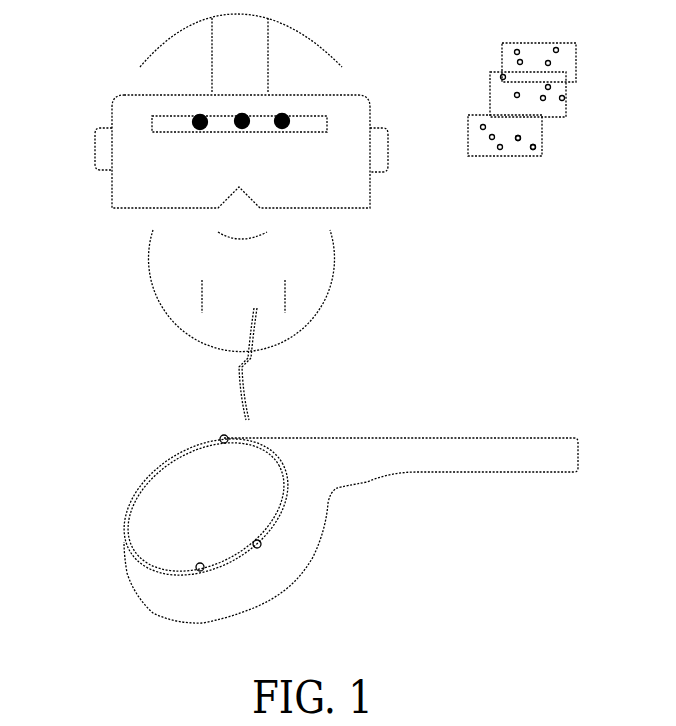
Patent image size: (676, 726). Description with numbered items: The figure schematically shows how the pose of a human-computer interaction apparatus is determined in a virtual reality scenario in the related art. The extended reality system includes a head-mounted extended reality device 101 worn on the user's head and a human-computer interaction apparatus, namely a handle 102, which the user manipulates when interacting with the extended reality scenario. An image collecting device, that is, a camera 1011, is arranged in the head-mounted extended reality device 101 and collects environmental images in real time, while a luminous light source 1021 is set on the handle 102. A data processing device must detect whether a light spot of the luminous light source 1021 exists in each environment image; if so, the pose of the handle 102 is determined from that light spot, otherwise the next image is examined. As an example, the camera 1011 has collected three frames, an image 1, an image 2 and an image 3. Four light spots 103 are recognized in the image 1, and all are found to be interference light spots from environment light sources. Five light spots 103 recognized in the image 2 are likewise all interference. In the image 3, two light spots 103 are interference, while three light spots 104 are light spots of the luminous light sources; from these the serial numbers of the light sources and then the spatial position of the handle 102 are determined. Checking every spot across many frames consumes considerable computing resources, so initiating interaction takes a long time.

The head-mounted extended reality device 101 is at (121, 117).
The image collecting device (camera) 1011 is at (276, 116).
The human-computer interaction apparatus (handle) 102 is at (380, 440).
The luminous light source 1021 is at (259, 547).
The light spots (interference light spots) 103 is at (490, 137).
The light spots of the luminous light sources 104 is at (532, 150).
The image 1 is at (546, 62).
The image 2 is at (519, 94).
The image 3 is at (512, 135).